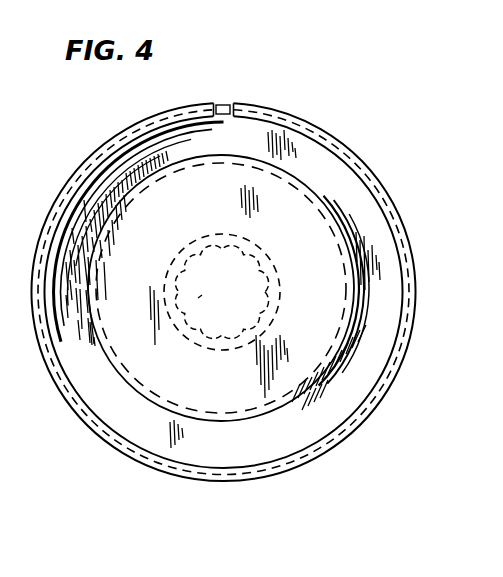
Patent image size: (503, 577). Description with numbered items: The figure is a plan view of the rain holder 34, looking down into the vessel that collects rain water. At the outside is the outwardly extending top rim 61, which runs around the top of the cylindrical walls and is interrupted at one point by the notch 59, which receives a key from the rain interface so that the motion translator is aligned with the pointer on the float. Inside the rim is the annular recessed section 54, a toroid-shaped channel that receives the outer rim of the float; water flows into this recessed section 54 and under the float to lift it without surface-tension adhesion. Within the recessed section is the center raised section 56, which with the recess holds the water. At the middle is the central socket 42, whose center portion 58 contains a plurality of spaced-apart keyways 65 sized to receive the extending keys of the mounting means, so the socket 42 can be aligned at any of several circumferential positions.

The rain holder 34 is at (446, 196).
The socket 42 is at (237, 227).
The annular recessed section 54 is at (323, 182).
The raised section 56 is at (124, 330).
The center portion 58 is at (272, 265).
The notch 59 is at (226, 104).
The top rim 61 is at (412, 258).
The keyways 65 is at (202, 295).